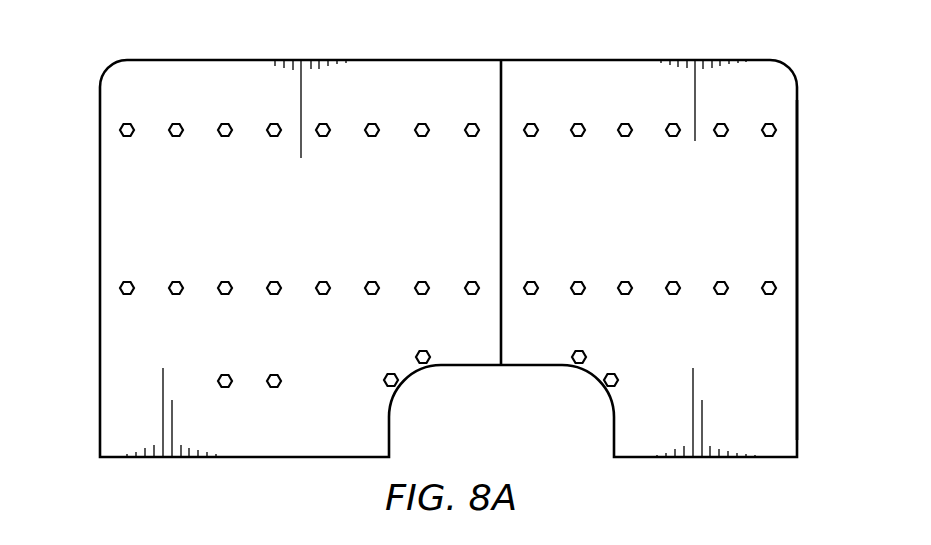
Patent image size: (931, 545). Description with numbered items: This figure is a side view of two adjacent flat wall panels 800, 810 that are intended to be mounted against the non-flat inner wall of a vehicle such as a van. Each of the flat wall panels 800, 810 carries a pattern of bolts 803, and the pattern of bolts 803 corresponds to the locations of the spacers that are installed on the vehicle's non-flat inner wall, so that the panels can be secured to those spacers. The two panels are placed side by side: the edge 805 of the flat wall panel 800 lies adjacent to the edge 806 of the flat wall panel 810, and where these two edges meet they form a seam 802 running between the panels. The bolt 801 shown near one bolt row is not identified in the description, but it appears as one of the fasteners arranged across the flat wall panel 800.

The flat wall panel 800 is at (125, 218).
The hex nut 801 is at (177, 131).
The seam 802 is at (501, 87).
The bolts 803 is at (472, 131).
The edge of flat wall panel 805 is at (486, 218).
The edge of flat wall panel 806 is at (516, 218).
The flat wall panel 810 is at (770, 218).